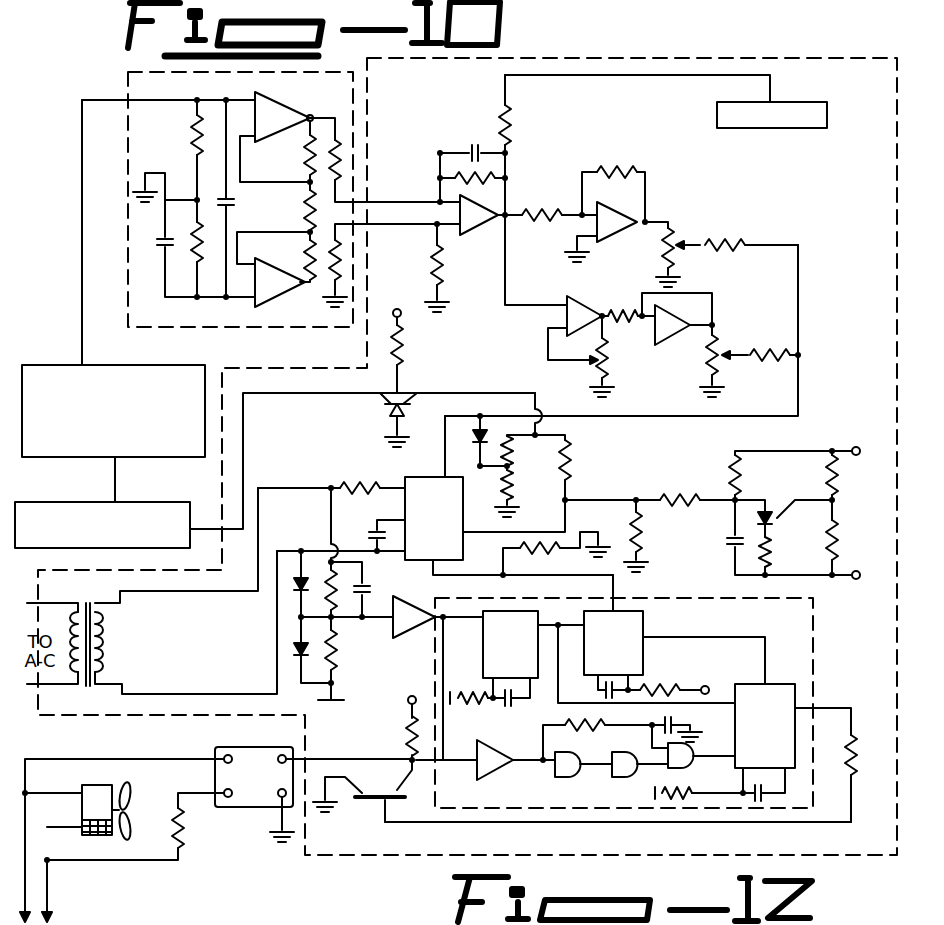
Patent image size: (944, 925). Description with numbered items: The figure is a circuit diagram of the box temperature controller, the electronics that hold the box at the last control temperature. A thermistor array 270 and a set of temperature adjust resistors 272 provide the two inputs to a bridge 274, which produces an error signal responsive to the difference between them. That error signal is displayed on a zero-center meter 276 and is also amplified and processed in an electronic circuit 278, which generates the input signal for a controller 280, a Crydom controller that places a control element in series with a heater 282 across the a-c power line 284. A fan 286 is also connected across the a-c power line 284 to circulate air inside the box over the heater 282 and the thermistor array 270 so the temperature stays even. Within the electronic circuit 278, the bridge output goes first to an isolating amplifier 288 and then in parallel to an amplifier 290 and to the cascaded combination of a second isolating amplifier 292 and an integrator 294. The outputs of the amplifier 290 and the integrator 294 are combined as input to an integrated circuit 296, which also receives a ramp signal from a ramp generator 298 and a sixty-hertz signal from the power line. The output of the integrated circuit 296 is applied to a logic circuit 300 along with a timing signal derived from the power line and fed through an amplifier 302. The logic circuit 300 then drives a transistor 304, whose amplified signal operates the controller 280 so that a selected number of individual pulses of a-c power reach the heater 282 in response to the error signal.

The thermistor array 270 is at (68, 504).
The temperature adjust resistors 272 is at (123, 457).
The bridge 274 is at (150, 84).
The zero-center meter 276 is at (780, 128).
The electronic circuit 278 is at (696, 60).
The controller 280 is at (235, 786).
The heater 282 is at (194, 826).
The a-c power line 284 is at (14, 903).
The fan 286 is at (98, 836).
The isolating amplifier 288 is at (478, 222).
The amplifier 290 is at (596, 225).
The isolating amplifier 292 is at (565, 320).
The integrator 294 is at (672, 330).
The integrated circuit 296 is at (415, 527).
The ramp generator 298 is at (808, 495).
The logic circuit 300 is at (810, 640).
The amplifier 302 is at (406, 638).
The transistor 304 is at (372, 805).